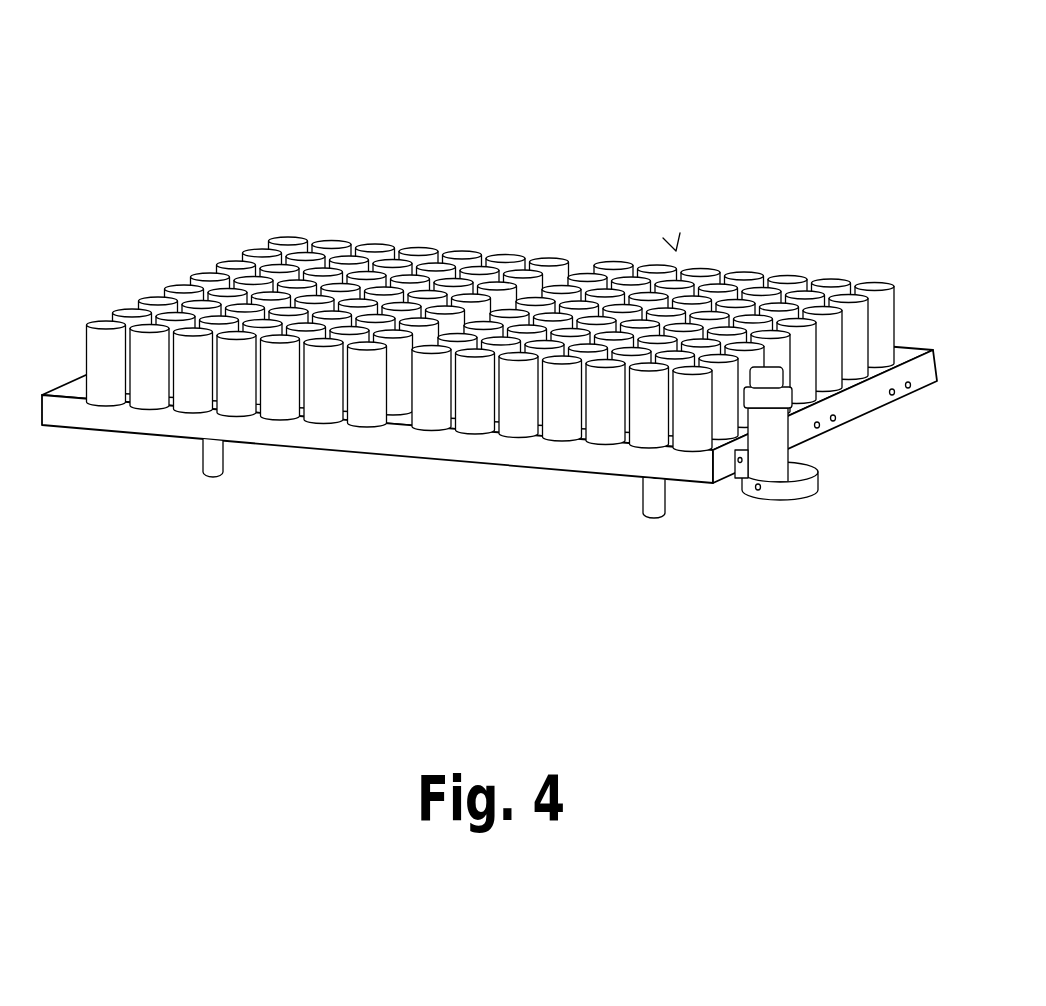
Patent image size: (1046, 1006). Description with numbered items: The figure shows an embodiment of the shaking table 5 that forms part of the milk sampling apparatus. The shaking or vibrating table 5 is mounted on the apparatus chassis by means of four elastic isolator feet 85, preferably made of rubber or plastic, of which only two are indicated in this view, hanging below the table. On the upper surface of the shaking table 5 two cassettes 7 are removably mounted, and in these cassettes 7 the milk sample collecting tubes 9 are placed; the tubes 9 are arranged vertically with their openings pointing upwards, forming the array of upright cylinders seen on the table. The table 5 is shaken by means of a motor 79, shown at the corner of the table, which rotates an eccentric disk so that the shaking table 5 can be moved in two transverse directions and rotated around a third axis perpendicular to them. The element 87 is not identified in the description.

The shaking table 5 is at (898, 347).
The cassette 7 is at (489, 266).
The milk sample collecting tube 9 is at (310, 262).
The motor 79 is at (770, 423).
The elastic isolator foot 85 is at (227, 455).
The pin base disc 87 is at (785, 490).